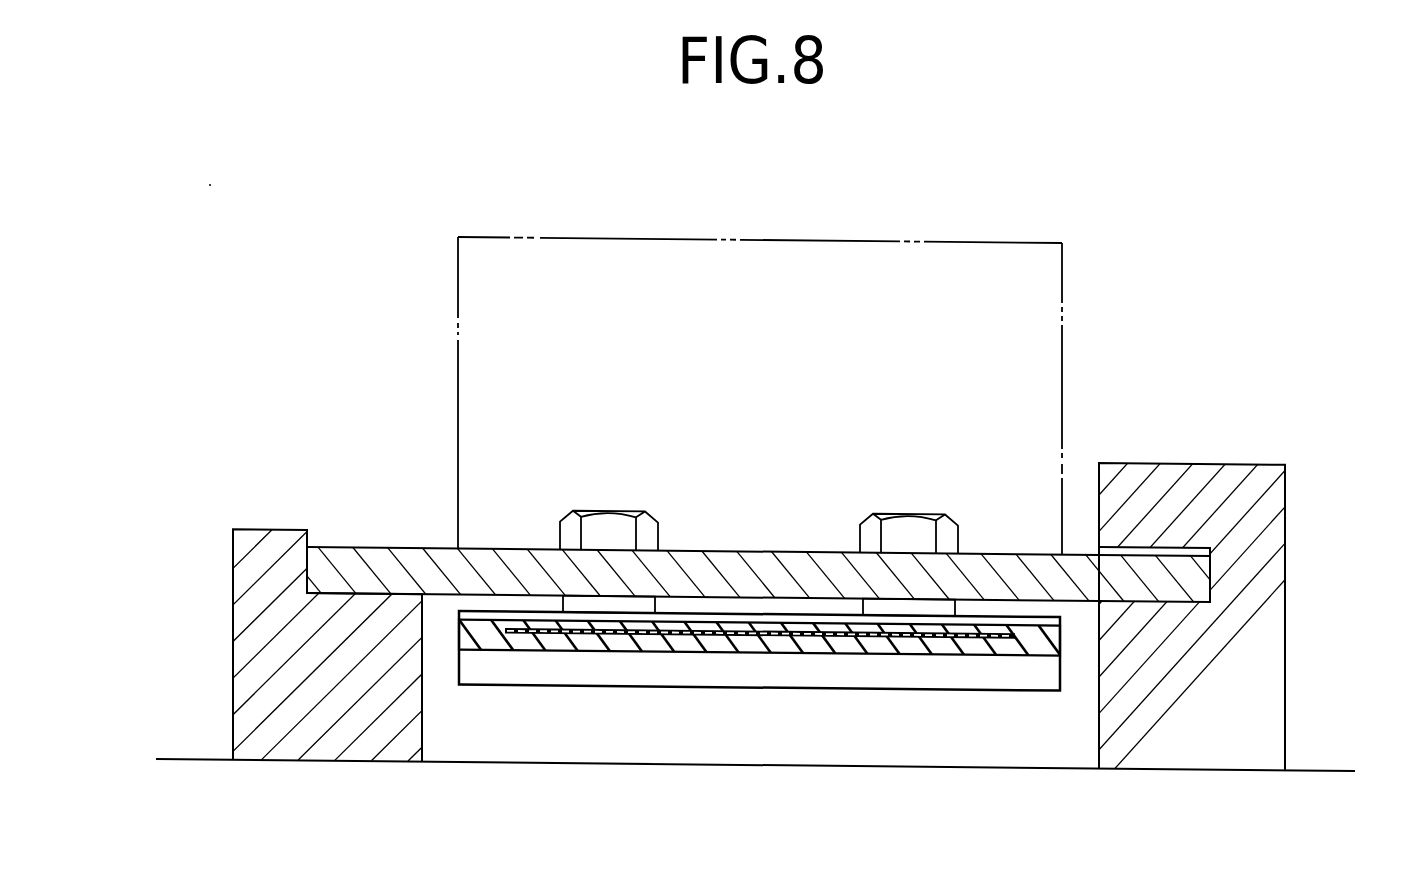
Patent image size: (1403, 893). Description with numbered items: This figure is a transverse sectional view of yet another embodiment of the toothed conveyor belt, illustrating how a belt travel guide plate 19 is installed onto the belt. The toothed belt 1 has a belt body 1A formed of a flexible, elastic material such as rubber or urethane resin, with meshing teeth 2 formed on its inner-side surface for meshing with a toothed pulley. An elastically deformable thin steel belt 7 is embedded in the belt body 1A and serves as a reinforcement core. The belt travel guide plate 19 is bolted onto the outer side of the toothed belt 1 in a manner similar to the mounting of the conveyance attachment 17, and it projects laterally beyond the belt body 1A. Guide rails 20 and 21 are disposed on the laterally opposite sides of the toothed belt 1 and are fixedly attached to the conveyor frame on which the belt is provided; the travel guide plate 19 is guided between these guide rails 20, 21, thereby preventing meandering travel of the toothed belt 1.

The toothed belt 1 is at (749, 676).
The belt body 1A is at (485, 637).
The meshing teeth 2 is at (983, 670).
The thin steel belt 7 is at (578, 631).
The conveyance attachment 17 is at (458, 347).
The belt travel guide plate 19 is at (1020, 545).
The guide rail 20 is at (243, 653).
The guide rail 21 is at (1275, 621).